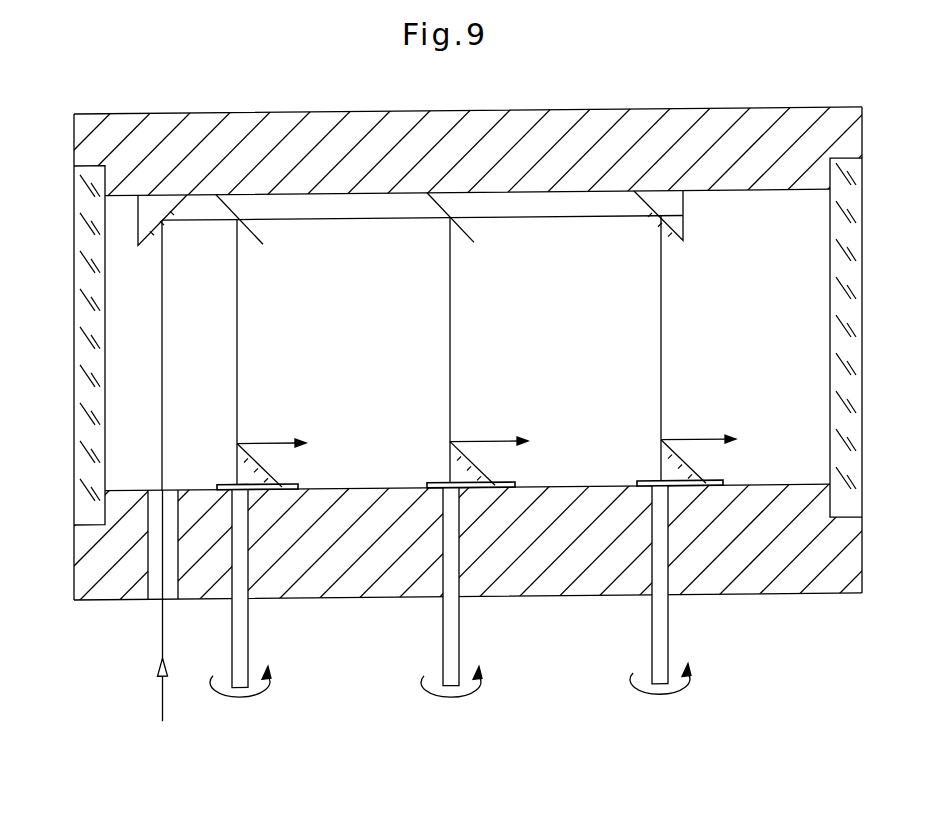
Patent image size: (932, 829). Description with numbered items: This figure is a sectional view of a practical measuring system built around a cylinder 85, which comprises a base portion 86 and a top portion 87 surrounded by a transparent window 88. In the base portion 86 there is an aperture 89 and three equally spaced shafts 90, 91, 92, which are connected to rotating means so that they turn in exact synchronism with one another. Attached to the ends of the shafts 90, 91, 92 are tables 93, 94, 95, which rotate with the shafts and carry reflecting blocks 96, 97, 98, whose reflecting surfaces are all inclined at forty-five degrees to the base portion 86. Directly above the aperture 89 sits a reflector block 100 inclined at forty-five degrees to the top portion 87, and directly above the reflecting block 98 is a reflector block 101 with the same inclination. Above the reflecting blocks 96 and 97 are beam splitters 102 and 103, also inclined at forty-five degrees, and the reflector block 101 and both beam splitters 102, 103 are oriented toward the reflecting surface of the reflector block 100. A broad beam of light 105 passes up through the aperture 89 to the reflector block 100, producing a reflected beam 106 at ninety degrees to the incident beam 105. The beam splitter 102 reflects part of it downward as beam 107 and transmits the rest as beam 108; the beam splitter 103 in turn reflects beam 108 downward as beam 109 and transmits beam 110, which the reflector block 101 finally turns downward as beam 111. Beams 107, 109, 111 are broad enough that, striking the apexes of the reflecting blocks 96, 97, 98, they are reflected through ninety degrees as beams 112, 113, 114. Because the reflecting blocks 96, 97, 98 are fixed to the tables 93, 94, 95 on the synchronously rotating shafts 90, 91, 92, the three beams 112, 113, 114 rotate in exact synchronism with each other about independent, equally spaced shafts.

The cylinder 85 is at (864, 229).
The base portion 86 is at (466, 596).
The top portion 87 is at (724, 123).
The transparent window 88 is at (74, 340).
The aperture 89 is at (170, 604).
The shaft 90 is at (249, 630).
The shaft 91 is at (460, 631).
The shaft 92 is at (669, 632).
The table 93 is at (226, 486).
The table 94 is at (437, 486).
The table 95 is at (650, 486).
The reflecting block 96 is at (270, 470).
The reflecting block 97 is at (480, 469).
The reflecting block 98 is at (690, 468).
The reflector block 100 is at (142, 229).
The reflector block 101 is at (685, 250).
The beam splitter 102 is at (265, 247).
The beam splitter 103 is at (476, 249).
The broad beam of light 105 is at (161, 704).
The reflected beam 106 is at (200, 222).
The beam 107 is at (239, 364).
The transmitted beam 108 is at (355, 223).
The beam 109 is at (451, 366).
The transmitted beam 110 is at (570, 225).
The beam 111 is at (662, 368).
The beam 112 is at (306, 447).
The beam 113 is at (527, 447).
The beam 114 is at (735, 447).